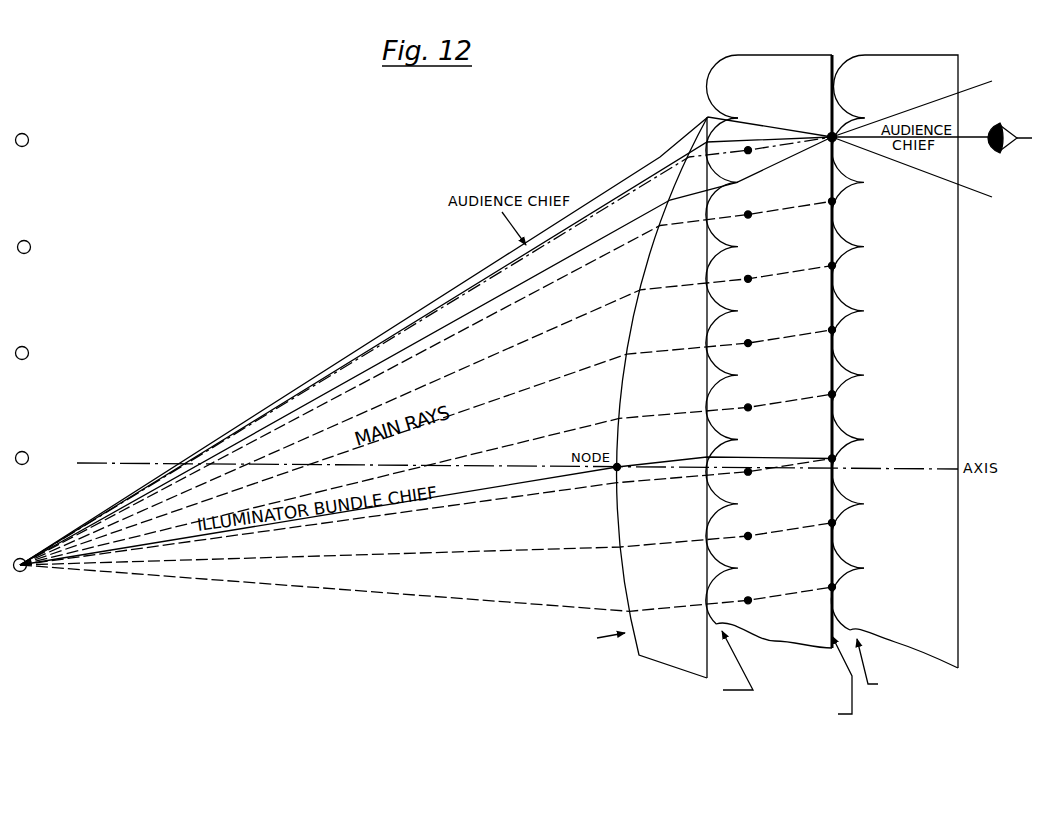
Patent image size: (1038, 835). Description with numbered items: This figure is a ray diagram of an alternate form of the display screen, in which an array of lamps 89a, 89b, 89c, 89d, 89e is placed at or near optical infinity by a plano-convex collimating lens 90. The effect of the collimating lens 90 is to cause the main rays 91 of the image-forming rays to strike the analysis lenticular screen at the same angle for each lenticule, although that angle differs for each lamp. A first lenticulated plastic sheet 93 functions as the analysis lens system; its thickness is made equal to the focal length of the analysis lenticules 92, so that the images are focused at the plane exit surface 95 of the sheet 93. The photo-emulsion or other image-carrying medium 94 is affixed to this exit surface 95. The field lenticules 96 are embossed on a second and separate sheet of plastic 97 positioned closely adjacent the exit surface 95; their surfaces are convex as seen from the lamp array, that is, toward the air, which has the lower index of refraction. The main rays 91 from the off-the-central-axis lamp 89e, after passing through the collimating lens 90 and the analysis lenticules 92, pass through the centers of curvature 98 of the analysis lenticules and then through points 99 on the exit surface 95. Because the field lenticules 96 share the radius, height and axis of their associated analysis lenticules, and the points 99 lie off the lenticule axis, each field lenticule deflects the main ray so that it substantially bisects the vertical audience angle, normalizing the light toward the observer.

The lamp 89a is at (27, 145).
The lamp 89b is at (30, 251).
The lamp 89c is at (27, 358).
The lamp 89d is at (27, 463).
The off-the-central-axis lamp 89e is at (18, 558).
The plano-convex collimating lens 90 is at (635, 647).
The main rays 91 is at (567, 431).
The analysis lenticules 92 is at (713, 629).
The first lenticulated plastic sheet 93 is at (787, 55).
The photo-emulsion 94 is at (831, 648).
The plane exit surface 95 is at (836, 55).
The field lenticules 96 is at (990, 697).
The second sheet of plastic 97 is at (925, 55).
The centers of curvature 98 is at (749, 147).
The points of the exit surface 99 is at (838, 133).